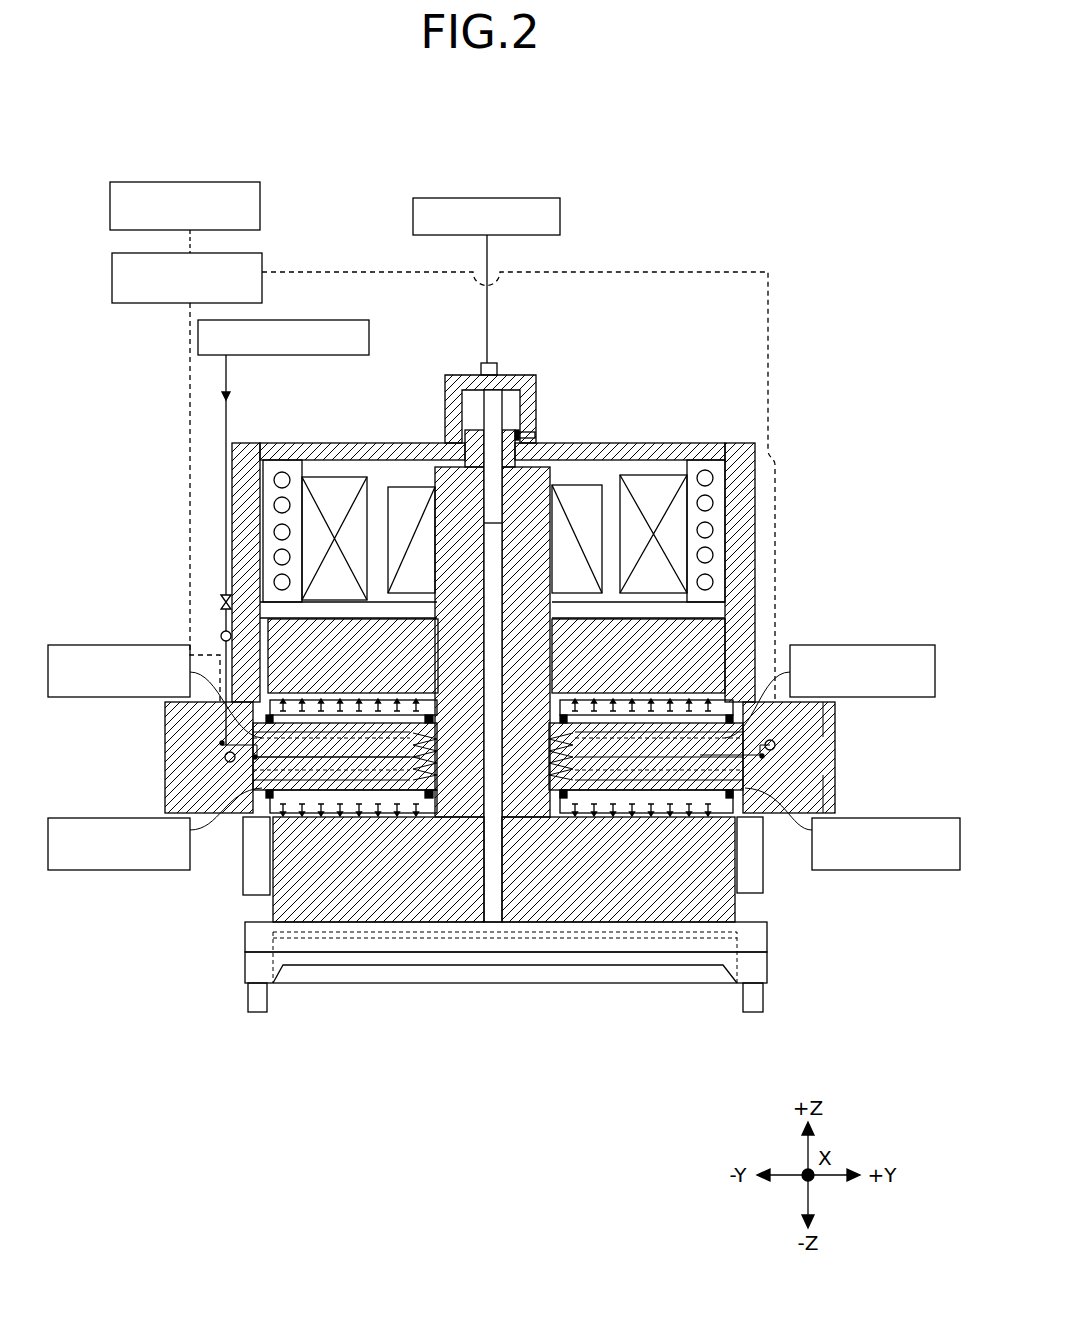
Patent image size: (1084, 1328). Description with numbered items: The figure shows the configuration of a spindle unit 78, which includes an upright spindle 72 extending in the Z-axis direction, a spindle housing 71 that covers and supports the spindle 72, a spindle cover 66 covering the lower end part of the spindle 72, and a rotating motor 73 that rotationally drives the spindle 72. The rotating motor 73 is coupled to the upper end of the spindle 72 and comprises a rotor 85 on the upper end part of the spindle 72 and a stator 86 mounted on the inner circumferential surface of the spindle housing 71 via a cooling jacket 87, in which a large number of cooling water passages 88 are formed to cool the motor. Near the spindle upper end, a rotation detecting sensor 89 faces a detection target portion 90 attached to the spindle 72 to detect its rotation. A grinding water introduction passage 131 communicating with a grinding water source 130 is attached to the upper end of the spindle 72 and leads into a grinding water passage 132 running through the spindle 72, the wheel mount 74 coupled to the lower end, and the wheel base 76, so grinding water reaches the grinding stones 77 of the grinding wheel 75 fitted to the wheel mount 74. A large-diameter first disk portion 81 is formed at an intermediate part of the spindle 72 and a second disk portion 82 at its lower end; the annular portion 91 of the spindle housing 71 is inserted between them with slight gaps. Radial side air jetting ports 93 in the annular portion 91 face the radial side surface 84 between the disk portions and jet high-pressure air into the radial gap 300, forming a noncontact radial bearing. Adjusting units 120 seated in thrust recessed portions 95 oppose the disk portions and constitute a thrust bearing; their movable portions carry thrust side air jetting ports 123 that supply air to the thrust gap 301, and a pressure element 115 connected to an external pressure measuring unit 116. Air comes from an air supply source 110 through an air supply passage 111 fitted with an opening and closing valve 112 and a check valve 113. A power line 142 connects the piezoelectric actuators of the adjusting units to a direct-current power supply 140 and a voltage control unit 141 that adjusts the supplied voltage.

The direct-current power supply 140 is at (225, 182).
The voltage control unit 141 is at (250, 253).
The power line 142 is at (190, 333).
The grinding water source 130 is at (470, 198).
The grinding water introduction passage 131 is at (478, 363).
The grinding water passage 132 is at (490, 600).
The spindle unit 78 is at (718, 245).
The air supply source 110 is at (318, 355).
The air supply passage 111 is at (226, 420).
The opening and closing valve 112 is at (222, 599).
The check valve 113 is at (221, 635).
The pressure measuring unit 116 is at (125, 645).
The spindle housing 71 is at (245, 468).
The rotating motor 73 is at (605, 478).
The rotor 85 is at (572, 485).
The stator 86 is at (655, 475).
The cooling jacket 87 is at (717, 470).
The cooling water passages 88 is at (707, 502).
The rotation detecting sensor 89 is at (535, 435).
The detection target portion 90 is at (527, 395).
The radial gap 300 is at (493, 623).
The thrust gap 301 is at (395, 702).
The first disk portion 81 is at (728, 660).
The adjusting units 120 is at (322, 685).
The pressure element 115 is at (352, 700).
The thrust recessed portions 95 is at (402, 712).
The radial side surface 84 is at (440, 815).
The radial side air jetting ports 93 is at (437, 750).
The annular portion 91 is at (838, 708).
The thrust side air jetting ports 123 is at (245, 722).
The spindle 72 is at (290, 905).
The spindle cover 66 is at (760, 885).
The second disk portion 82 is at (735, 905).
The wheel mount 74 is at (765, 938).
The wheel base 76 is at (758, 970).
The grinding stones 77 is at (762, 1000).
The grinding wheel 75 is at (843, 965).